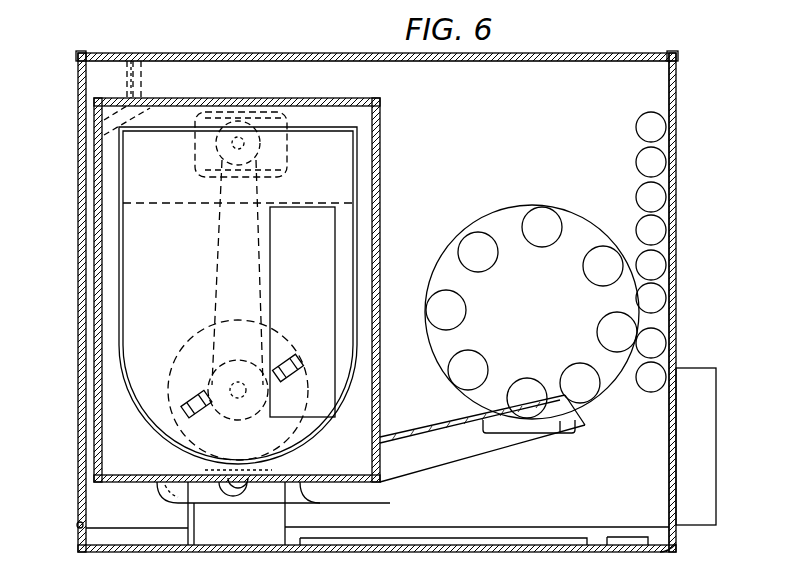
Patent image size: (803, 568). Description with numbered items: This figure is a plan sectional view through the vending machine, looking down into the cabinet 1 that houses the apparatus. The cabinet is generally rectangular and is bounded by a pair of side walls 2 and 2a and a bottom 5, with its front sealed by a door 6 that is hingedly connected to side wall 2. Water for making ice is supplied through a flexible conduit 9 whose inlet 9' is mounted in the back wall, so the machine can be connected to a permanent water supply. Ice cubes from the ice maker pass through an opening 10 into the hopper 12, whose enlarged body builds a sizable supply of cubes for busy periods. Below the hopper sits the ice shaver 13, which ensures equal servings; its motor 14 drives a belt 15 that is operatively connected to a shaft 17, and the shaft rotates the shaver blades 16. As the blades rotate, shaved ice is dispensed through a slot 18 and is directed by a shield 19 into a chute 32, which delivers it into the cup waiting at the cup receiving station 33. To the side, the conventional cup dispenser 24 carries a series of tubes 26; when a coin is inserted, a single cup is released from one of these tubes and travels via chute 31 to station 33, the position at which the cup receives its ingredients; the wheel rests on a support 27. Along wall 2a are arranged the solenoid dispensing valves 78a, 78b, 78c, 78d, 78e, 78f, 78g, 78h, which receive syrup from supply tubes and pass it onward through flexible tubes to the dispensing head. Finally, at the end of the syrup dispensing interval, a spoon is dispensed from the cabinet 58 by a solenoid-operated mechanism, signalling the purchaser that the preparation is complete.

The cabinet 1 is at (63, 550).
The side wall 2 is at (78, 232).
The side wall 2a is at (676, 93).
The bottom 5 is at (175, 502).
The door 6 is at (645, 555).
The flexible conduit 9 is at (108, 107).
The inlet 9' is at (120, 64).
The opening 10 is at (340, 296).
The hopper 12 is at (124, 270).
The ice shaver 13 is at (172, 317).
The motor 14 is at (196, 150).
The belt 15 is at (212, 263).
The shaver blades 16 is at (200, 411).
The shaft 17 is at (238, 390).
The slot 18 is at (238, 451).
The shield 19 is at (245, 457).
The cup dispenser 24 is at (550, 287).
The tubes 26 is at (617, 332).
The wheel support 27 is at (565, 433).
The chute 31 is at (452, 449).
The chute 32 is at (238, 513).
The cup receiving station 33 is at (282, 523).
The cabinet 58 is at (717, 426).
The solenoid dispensing valve 78a is at (655, 377).
The solenoid dispensing valve 78b is at (655, 343).
The solenoid dispensing valve 78c is at (655, 298).
The solenoid dispensing valve 78d is at (655, 265).
The solenoid dispensing valve 78e is at (655, 230).
The solenoid dispensing valve 78f is at (655, 197).
The solenoid dispensing valve 78g is at (655, 162).
The solenoid dispensing valve 78h is at (655, 127).